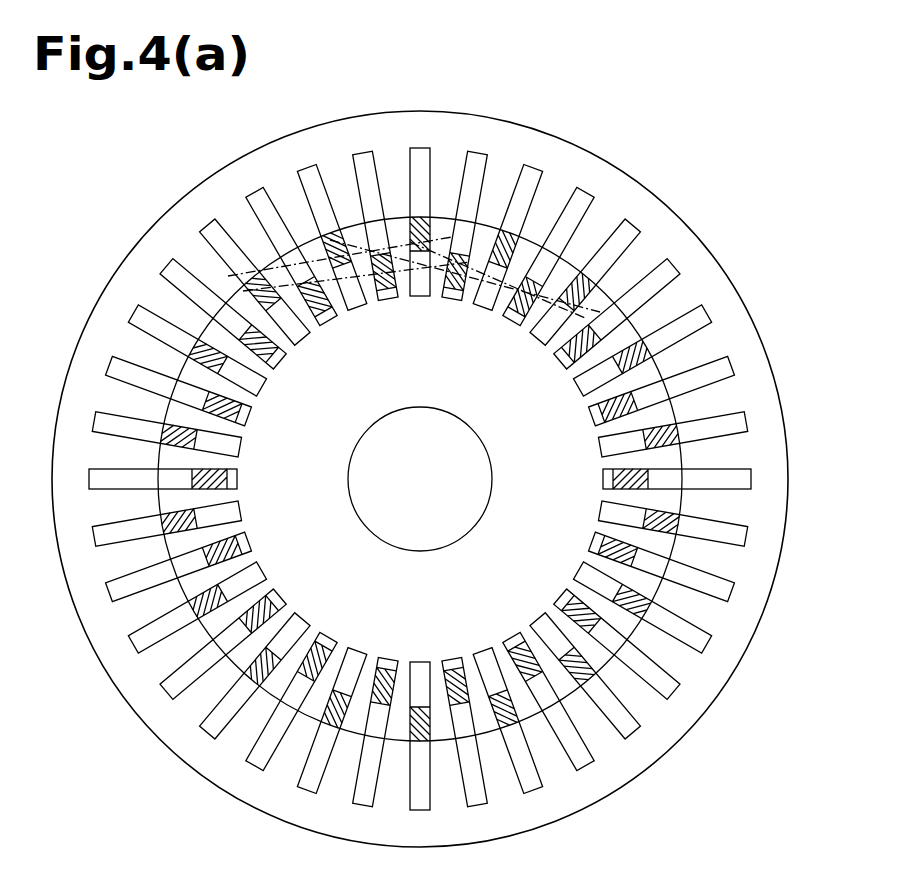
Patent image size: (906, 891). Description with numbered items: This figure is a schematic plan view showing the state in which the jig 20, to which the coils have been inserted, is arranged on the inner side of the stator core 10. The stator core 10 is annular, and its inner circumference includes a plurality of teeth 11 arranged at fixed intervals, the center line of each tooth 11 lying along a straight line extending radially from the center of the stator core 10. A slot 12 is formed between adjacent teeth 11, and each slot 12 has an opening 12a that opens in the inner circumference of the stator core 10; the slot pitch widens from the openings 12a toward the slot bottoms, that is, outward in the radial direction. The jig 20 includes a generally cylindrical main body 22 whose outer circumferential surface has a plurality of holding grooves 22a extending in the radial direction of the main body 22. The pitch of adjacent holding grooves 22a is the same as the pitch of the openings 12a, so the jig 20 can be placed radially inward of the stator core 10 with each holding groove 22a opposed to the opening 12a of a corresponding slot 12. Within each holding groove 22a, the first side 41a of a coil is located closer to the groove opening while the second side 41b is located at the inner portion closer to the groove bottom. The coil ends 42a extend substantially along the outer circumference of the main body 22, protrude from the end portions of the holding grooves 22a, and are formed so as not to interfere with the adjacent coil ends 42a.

The stator core 10 is at (625, 778).
The tooth 11 is at (233, 393).
The slot 12 is at (313, 182).
The opening 12a is at (200, 488).
The jig 20 is at (699, 461).
The main body 22 is at (533, 554).
The holding groove 22a is at (437, 297).
The first side 41a is at (293, 250).
The second side 41b is at (470, 300).
The coil end 42a is at (362, 300).